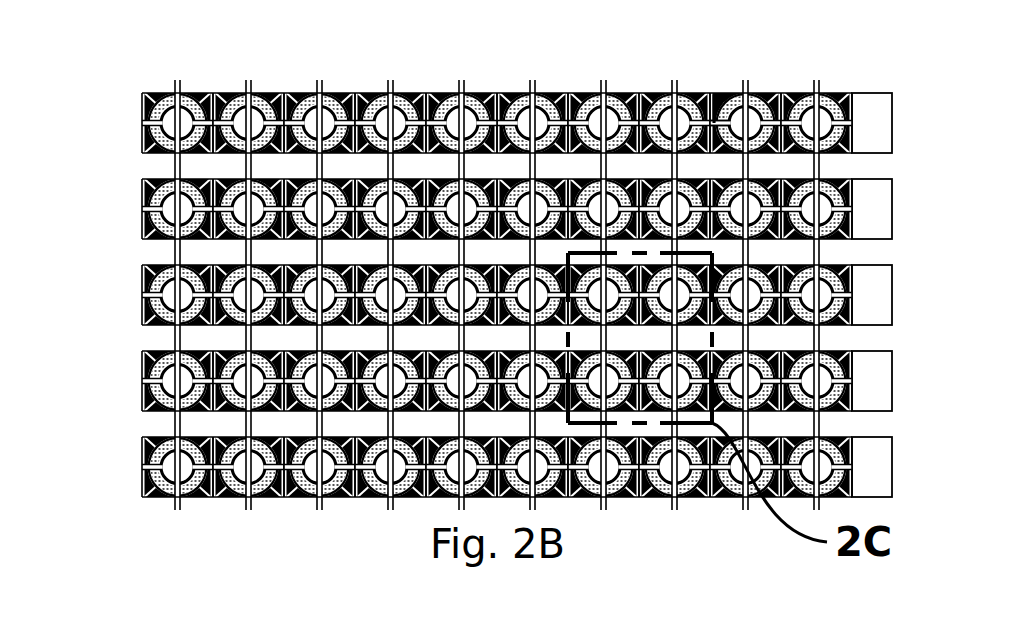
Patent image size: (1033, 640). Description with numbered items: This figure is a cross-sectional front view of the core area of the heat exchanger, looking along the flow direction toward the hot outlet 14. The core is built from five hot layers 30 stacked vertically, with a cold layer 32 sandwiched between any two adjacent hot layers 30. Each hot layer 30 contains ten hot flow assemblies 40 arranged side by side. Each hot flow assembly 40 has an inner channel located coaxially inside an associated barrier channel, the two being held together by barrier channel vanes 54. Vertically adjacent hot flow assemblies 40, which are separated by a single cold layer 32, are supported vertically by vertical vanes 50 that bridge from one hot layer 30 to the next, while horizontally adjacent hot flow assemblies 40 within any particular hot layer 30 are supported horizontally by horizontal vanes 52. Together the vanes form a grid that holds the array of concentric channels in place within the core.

The hot outlet 14 is at (878, 125).
The hot layer 30 is at (137, 122).
The cold layer 32 is at (137, 167).
The hot flow assembly 40 is at (480, 173).
The vertical vane 50 is at (533, 170).
The horizontal vane 52 is at (715, 121).
The barrier channel vane 54 is at (769, 120).